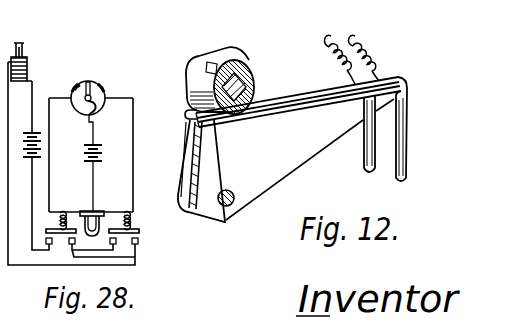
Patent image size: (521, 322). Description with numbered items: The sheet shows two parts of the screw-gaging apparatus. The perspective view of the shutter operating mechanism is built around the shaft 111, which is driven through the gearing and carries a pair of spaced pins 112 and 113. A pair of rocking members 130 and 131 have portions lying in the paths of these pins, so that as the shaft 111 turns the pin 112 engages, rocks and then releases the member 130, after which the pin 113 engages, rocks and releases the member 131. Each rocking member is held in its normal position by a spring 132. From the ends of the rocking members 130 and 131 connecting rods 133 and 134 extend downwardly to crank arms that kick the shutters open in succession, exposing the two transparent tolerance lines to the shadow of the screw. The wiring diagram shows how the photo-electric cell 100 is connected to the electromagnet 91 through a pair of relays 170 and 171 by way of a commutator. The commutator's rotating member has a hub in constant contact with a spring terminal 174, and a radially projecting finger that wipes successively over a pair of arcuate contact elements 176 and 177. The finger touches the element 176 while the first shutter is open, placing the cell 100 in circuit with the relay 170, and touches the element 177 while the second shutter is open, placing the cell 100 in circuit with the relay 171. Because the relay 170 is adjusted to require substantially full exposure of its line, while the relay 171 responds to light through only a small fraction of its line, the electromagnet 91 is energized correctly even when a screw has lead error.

In FIG. 28, the electromagnet 91 is at (28, 70).
In FIG. 28, the arcuate contact element 176 is at (82, 85).
In FIG. 28, the arcuate contact element 177 is at (99, 88).
In FIG. 28, the spring terminal 174 is at (97, 113).
In FIG. 28, the relay 170 is at (60, 210).
In FIG. 28, the photo-electric cell 100 is at (98, 212).
In FIG. 28, the relay 171 is at (128, 212).
In FIG. 12, the pin 113 is at (219, 52).
In FIG. 12, the shaft 111 is at (250, 70).
In FIG. 12, the pin 112 is at (186, 115).
In FIG. 12, the rocking member 130 is at (285, 98).
In FIG. 12, the rocking member 131 is at (287, 178).
In FIG. 12, the spring 132 is at (333, 34).
In FIG. 12, the connecting rod 133 is at (376, 142).
In FIG. 12, the connecting rod 134 is at (408, 168).